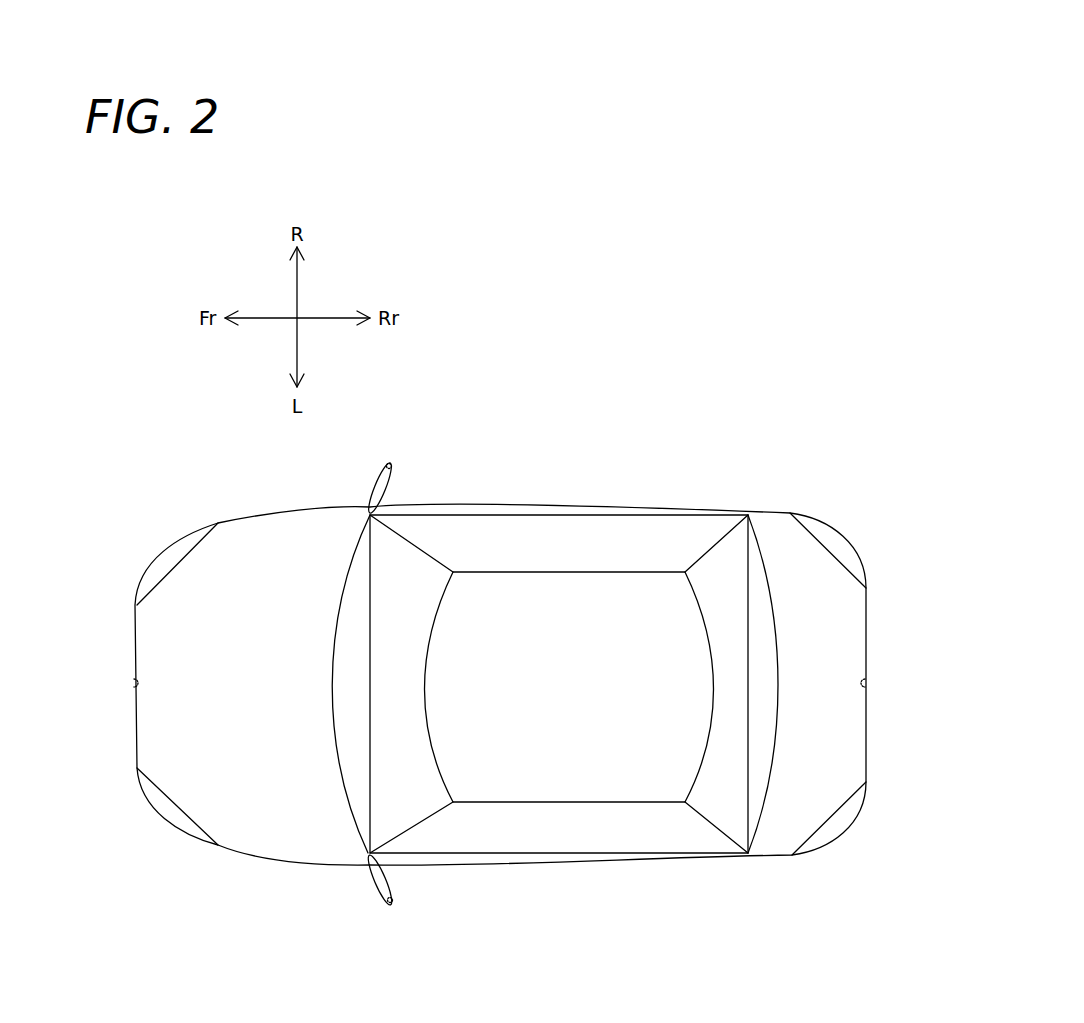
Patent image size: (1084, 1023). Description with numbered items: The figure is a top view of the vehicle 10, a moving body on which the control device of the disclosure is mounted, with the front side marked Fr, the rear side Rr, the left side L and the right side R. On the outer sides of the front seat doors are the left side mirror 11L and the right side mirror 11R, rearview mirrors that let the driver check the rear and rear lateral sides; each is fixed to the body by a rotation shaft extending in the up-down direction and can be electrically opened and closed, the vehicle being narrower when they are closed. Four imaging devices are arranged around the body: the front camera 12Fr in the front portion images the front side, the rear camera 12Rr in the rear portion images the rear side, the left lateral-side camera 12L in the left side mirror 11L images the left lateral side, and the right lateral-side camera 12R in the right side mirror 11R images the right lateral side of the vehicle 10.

The vehicle 10 is at (660, 510).
The right side mirror 11R is at (374, 485).
The left side mirror 11L is at (375, 887).
The right lateral-side camera 12R is at (392, 466).
The left lateral-side camera 12L is at (393, 900).
The front camera 12Fr is at (131, 683).
The rear camera 12Rr is at (869, 683).